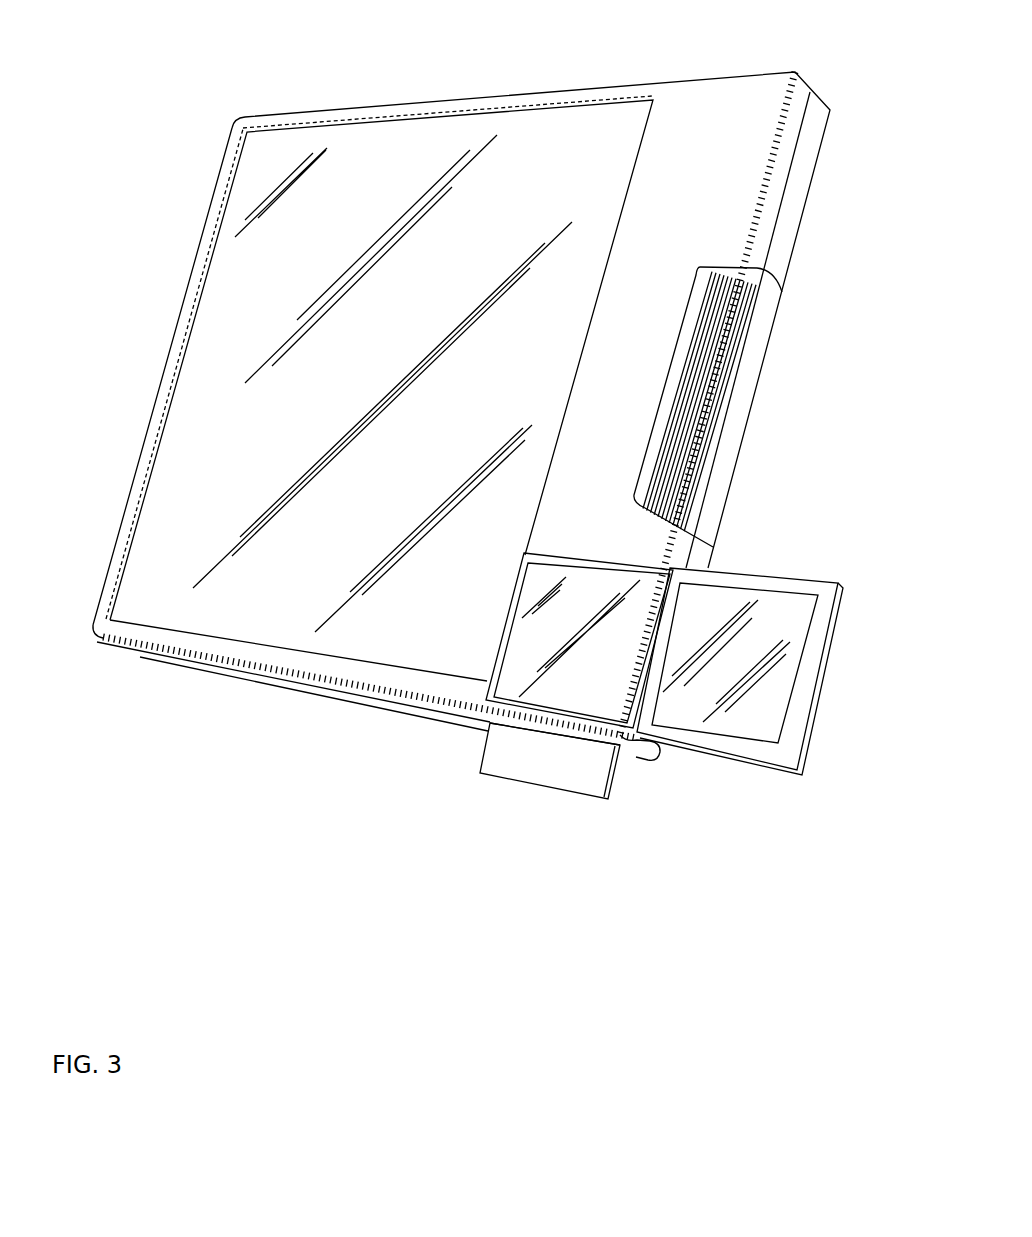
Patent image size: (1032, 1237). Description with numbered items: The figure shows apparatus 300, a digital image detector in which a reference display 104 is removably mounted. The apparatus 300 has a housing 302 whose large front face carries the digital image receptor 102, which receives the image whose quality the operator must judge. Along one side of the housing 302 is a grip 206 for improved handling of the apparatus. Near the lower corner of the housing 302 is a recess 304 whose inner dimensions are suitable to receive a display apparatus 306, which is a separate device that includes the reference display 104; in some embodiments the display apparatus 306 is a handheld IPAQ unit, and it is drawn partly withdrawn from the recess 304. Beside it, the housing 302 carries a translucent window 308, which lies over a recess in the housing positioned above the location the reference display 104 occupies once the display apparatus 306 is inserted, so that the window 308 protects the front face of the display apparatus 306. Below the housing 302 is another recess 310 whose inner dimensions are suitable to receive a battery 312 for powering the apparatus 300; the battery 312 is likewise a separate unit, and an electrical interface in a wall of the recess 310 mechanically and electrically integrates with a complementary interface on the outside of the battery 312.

The apparatus 300 is at (785, 1003).
The housing 302 is at (725, 107).
The digital image receptor 102 is at (362, 160).
The grip 206 is at (663, 403).
The translucent window 308 is at (632, 582).
The recess 304 is at (690, 568).
The display apparatus 306 is at (737, 742).
The reference display 104 is at (763, 713).
The battery 312 is at (553, 773).
The recess 310 is at (522, 728).